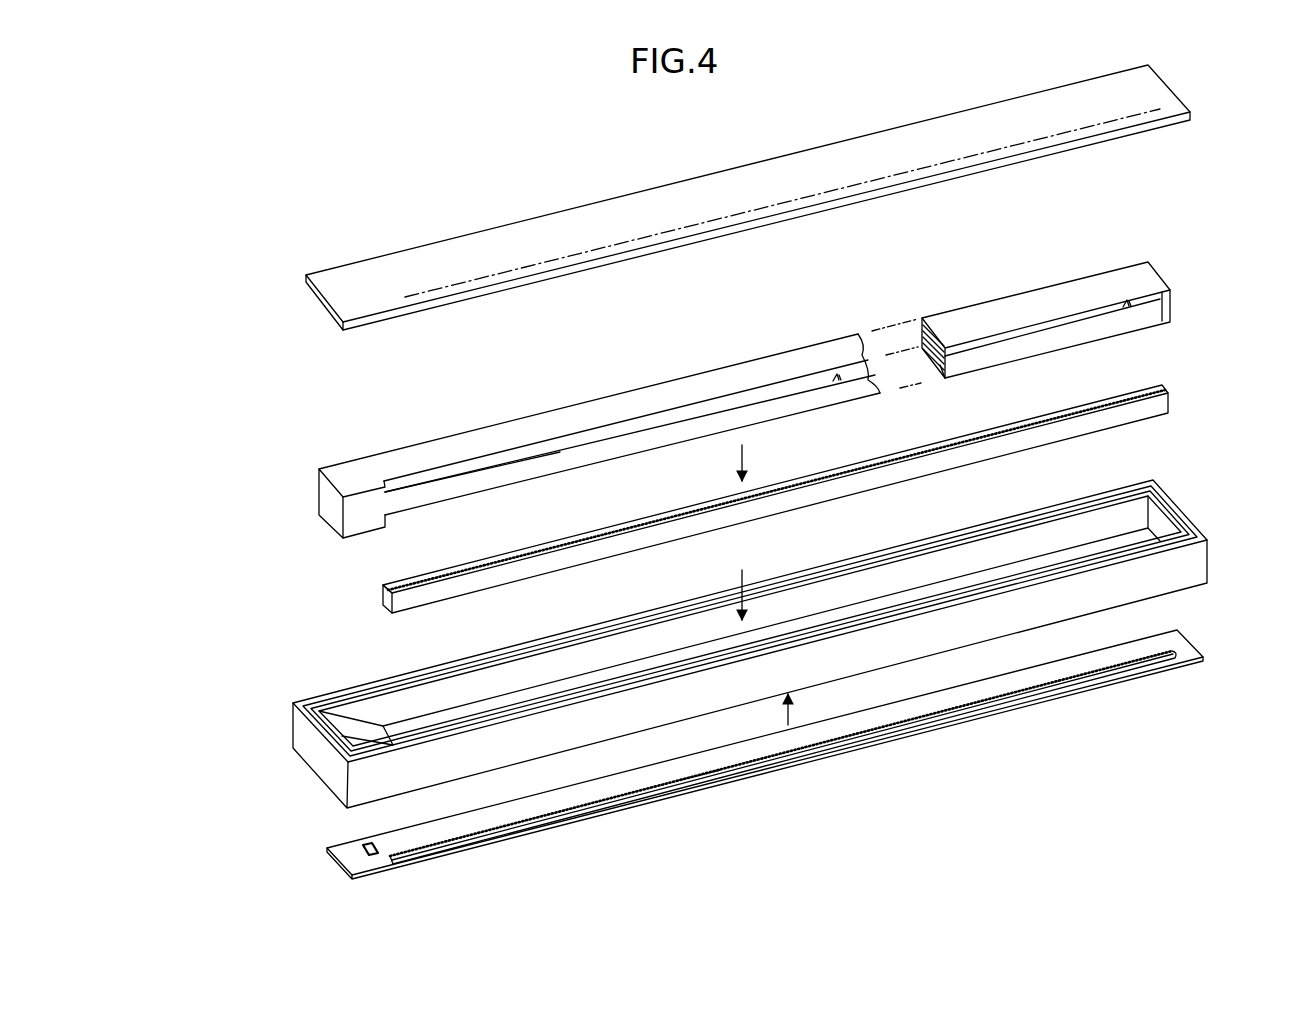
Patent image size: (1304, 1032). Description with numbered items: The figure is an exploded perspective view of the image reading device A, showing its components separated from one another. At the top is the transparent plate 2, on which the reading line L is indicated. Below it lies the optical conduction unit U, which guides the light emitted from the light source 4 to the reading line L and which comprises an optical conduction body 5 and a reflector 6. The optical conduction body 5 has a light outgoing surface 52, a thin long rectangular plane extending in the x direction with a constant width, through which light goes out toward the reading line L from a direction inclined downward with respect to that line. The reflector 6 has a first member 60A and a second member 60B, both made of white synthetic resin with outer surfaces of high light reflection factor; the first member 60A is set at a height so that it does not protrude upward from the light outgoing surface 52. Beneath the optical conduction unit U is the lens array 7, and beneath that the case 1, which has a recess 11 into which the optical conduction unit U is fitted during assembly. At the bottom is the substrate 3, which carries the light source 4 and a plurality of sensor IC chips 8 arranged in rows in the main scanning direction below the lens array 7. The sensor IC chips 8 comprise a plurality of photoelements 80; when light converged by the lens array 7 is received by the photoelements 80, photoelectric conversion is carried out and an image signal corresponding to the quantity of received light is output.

The case 1 is at (775, 644).
The transparent plate 2 is at (769, 197).
The substrate 3 is at (790, 773).
The light source 4 is at (368, 858).
The optical conduction body 5 is at (620, 411).
The reflector 6 is at (1059, 325).
The lens array 7 is at (1165, 402).
The sensor IC chips 8 is at (783, 757).
The recess 11 is at (355, 715).
The light outgoing surface 52 is at (678, 408).
The first member 60A is at (925, 331).
The second member 60B is at (943, 368).
The photoelements 80 is at (712, 770).
The image reading device A is at (264, 196).
The reading line L is at (566, 250).
The optical conduction unit U is at (1059, 336).